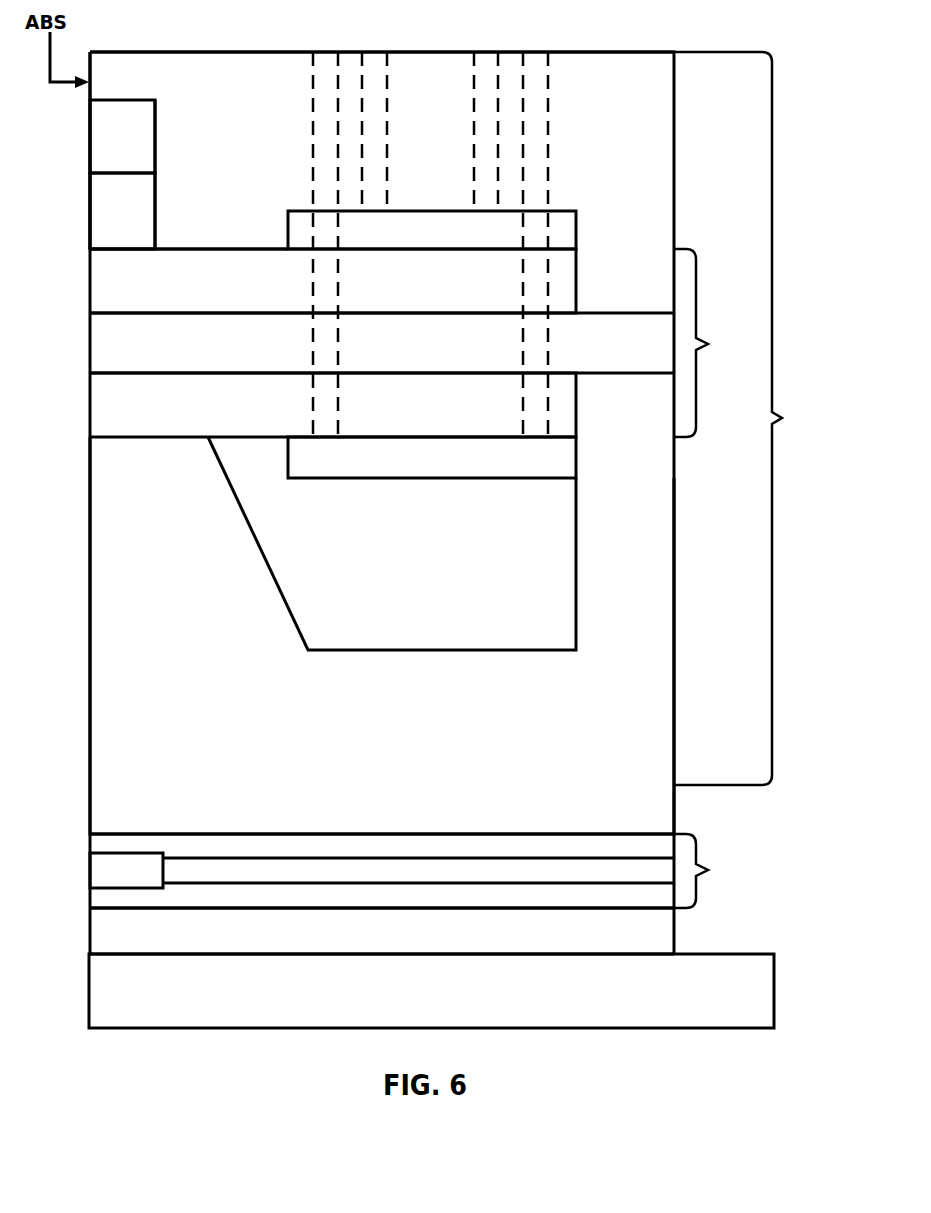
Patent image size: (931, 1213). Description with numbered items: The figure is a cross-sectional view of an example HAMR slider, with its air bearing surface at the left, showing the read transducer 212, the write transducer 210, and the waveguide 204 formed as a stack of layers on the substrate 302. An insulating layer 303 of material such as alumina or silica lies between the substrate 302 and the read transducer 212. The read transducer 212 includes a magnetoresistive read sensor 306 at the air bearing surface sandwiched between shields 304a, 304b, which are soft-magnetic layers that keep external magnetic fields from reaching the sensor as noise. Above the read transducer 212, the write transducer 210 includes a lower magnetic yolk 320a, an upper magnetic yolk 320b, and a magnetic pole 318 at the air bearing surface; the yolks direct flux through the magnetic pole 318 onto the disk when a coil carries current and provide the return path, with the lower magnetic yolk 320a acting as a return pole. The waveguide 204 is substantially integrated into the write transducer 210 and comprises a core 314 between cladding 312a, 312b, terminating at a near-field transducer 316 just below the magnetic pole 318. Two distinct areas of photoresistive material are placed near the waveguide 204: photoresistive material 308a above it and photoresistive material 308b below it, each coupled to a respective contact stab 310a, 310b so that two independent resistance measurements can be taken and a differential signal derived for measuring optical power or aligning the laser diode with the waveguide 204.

The waveguide 204 is at (755, 355).
The write transducer 210 is at (830, 430).
The read transducer 212 is at (755, 875).
The substrate 302 is at (448, 1003).
The insulating layer 303 is at (400, 941).
The shield 304a is at (405, 906).
The shield 304b is at (405, 856).
The magnetoresistive read sensor 306 is at (143, 881).
The photoresistive material 308a is at (455, 243).
The photoresistive material 308b is at (455, 471).
The contact stab 310a is at (474, 195).
The contact stab 310b is at (523, 127).
The cladding 312a is at (302, 420).
The cladding 312b is at (302, 295).
The core 314 is at (291, 355).
The near-field transducer 316 is at (142, 221).
The magnetic pole 318 is at (142, 146).
The lower magnetic yolk 320a is at (450, 801).
The upper magnetic yolk 320b is at (247, 157).